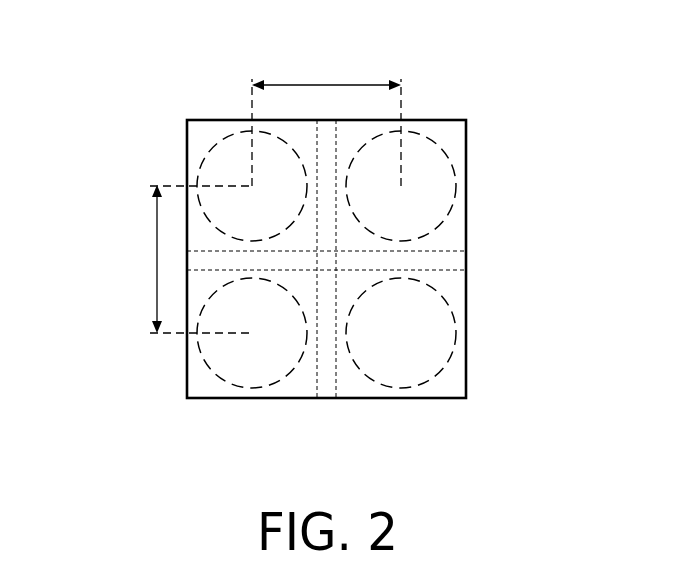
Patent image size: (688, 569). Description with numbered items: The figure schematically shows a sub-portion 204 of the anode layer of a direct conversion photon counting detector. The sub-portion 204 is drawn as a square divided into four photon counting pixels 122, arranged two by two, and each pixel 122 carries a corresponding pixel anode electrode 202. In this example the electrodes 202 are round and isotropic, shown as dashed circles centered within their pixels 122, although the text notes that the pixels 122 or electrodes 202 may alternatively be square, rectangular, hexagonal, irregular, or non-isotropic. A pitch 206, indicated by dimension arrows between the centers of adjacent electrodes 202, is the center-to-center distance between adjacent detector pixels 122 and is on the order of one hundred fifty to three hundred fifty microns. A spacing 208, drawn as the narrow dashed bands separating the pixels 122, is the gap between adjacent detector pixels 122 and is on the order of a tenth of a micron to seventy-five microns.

The sub-portion of the anode layer 204 is at (178, 115).
The pixel anode electrode 202 is at (420, 440).
The photon counting pixel 122 is at (520, 375).
The pitch 206 is at (326, 85).
The spacing 208 is at (466, 262).